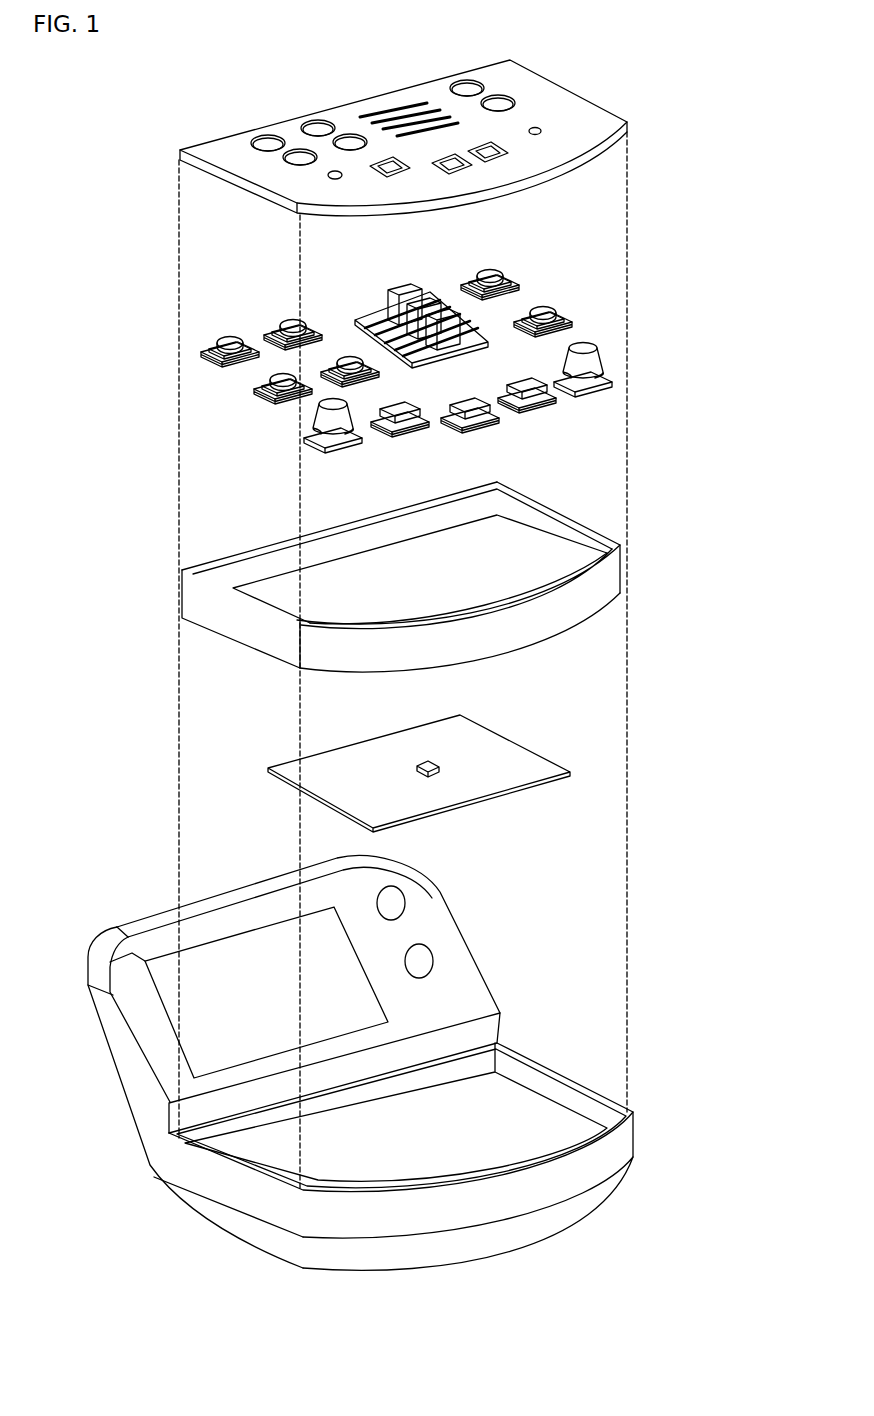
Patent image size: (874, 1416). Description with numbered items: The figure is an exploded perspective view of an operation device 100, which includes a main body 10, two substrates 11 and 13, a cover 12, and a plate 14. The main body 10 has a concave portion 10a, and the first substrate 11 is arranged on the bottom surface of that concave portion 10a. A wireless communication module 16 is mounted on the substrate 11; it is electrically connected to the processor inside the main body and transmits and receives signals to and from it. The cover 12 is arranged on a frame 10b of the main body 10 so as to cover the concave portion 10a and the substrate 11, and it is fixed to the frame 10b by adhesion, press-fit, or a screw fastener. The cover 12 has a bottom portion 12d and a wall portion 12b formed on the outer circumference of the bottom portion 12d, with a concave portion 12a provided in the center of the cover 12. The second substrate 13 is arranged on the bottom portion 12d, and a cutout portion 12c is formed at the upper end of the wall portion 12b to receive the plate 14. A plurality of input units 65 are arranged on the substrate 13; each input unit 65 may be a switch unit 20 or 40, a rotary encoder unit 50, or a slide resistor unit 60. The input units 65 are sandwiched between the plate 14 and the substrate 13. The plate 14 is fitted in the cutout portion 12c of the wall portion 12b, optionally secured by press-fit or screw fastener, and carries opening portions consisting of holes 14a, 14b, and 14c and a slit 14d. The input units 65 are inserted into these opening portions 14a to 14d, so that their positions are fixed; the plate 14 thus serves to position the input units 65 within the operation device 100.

The operation device 100 is at (740, 101).
The main body 10 is at (162, 1168).
The concave portion 10a is at (488, 1145).
The frame 10b is at (555, 1092).
The substrate 11 is at (264, 768).
The cover 12 is at (182, 600).
The concave portion 12a is at (520, 583).
The wall portion 12b is at (256, 572).
The cutout portion 12c is at (562, 524).
The bottom portion 12d is at (478, 666).
The substrate 13 is at (340, 570).
The plate 14 is at (180, 150).
The hole 14a is at (348, 140).
The hole 14b is at (497, 156).
The hole 14c is at (328, 178).
The slit 14d is at (427, 125).
The wireless communication module 16 is at (420, 762).
The switch unit 20 is at (548, 312).
The switch unit 40 is at (526, 416).
The rotary encoder unit 50 is at (586, 352).
The slide resistor unit 60 is at (392, 301).
The input unit 65 is at (650, 257).